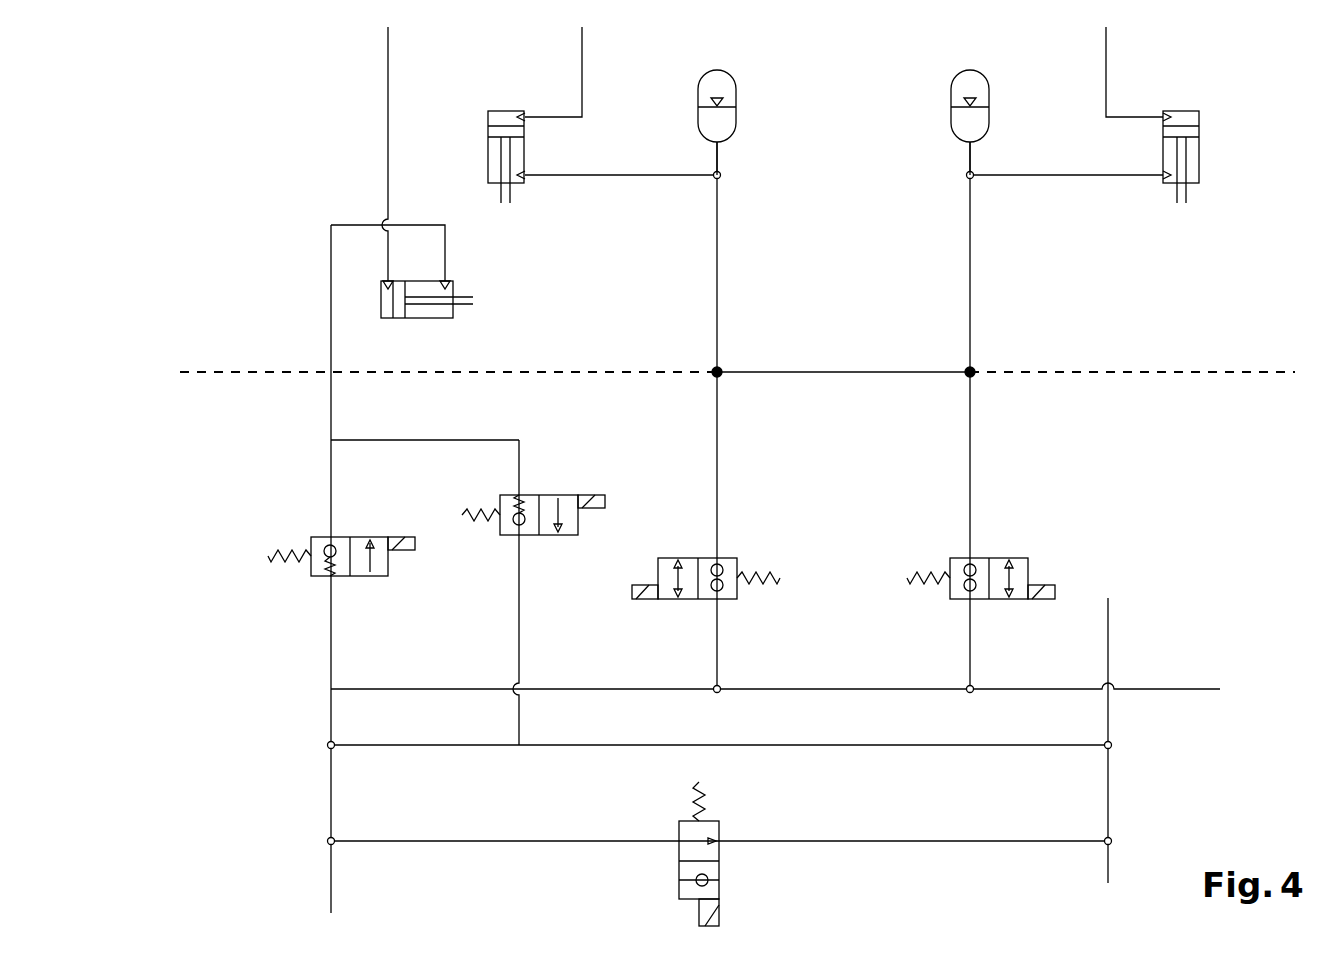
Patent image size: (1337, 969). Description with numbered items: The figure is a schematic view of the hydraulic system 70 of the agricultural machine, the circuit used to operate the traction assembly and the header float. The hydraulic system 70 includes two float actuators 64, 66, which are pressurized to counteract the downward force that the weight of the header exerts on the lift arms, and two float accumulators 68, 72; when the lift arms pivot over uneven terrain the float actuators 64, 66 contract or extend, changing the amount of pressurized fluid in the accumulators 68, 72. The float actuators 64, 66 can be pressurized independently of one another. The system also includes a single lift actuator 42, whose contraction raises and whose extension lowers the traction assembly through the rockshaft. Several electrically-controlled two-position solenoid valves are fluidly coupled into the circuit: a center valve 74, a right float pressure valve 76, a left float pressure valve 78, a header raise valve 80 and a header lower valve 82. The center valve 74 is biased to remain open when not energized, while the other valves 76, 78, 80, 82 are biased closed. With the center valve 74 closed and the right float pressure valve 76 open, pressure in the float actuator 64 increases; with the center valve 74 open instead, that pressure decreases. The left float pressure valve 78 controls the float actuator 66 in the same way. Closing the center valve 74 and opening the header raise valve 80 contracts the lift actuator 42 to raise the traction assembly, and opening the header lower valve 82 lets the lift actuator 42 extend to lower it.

The hydraulic system 70 is at (205, 130).
The lift actuator 42 is at (432, 318).
The float actuator 64 is at (507, 111).
The float actuator 66 is at (1200, 145).
The float accumulator 68 is at (722, 70).
The float accumulator 72 is at (975, 70).
The center valve 74 is at (719, 888).
The right float pressure valve 76 is at (1022, 558).
The left float pressure valve 78 is at (730, 558).
The header raise valve 80 is at (310, 537).
The header lower valve 82 is at (572, 495).